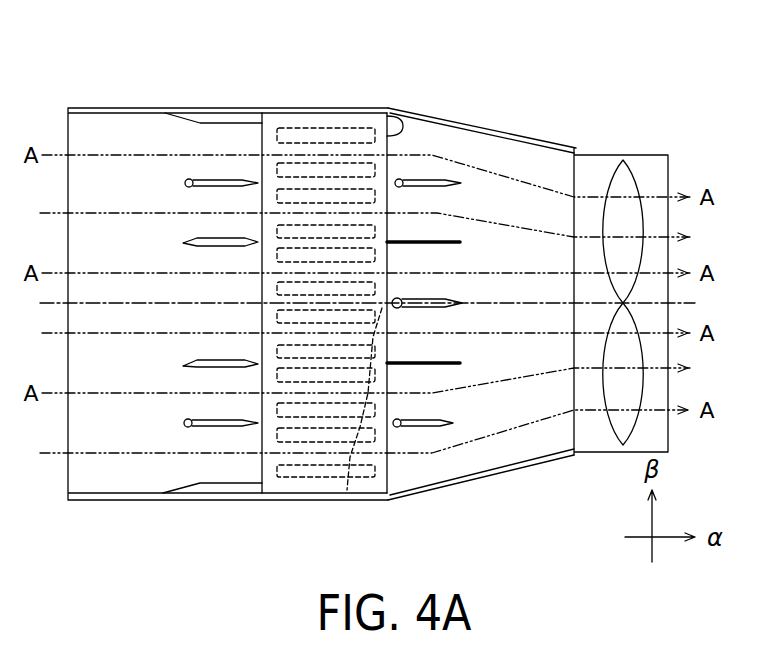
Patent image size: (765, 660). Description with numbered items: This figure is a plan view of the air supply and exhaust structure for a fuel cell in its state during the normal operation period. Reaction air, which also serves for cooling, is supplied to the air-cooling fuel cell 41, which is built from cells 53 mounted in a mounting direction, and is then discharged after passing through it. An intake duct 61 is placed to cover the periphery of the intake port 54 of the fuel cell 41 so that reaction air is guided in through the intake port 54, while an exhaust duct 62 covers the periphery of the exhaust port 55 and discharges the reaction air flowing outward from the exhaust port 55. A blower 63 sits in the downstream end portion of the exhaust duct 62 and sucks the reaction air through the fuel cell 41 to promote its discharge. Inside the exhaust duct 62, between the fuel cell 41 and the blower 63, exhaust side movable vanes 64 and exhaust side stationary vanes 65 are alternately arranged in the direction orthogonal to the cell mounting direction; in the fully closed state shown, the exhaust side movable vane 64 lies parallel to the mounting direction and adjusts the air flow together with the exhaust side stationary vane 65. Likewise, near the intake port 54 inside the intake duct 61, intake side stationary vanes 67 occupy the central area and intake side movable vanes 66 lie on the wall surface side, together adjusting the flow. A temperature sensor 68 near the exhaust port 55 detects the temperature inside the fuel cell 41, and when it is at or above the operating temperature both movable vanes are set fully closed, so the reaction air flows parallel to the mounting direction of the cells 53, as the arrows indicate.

The fuel cell 41 is at (350, 121).
The cells 53 is at (313, 167).
The intake port 54 is at (260, 433).
The exhaust port 55 is at (397, 114).
The intake duct 61 is at (118, 500).
The exhaust duct 62 is at (538, 464).
The blower 63 is at (624, 159).
The exhaust side movable vane 64 is at (457, 517).
The exhaust side stationary vane 65 is at (450, 242).
The intake side movable vane 66 is at (210, 420).
The intake side stationary vane 67 is at (193, 363).
The temperature sensor 68 is at (347, 490).